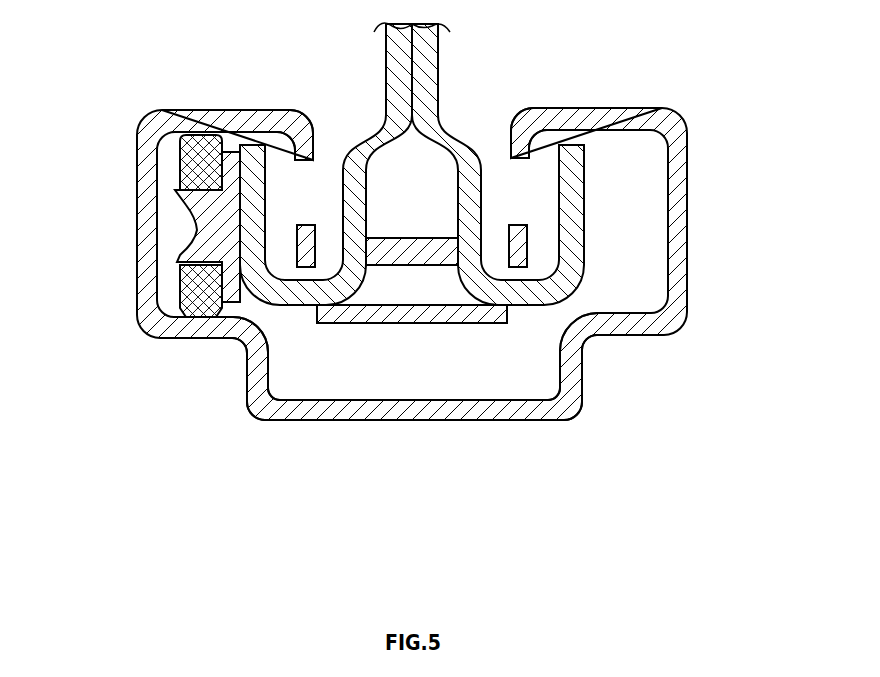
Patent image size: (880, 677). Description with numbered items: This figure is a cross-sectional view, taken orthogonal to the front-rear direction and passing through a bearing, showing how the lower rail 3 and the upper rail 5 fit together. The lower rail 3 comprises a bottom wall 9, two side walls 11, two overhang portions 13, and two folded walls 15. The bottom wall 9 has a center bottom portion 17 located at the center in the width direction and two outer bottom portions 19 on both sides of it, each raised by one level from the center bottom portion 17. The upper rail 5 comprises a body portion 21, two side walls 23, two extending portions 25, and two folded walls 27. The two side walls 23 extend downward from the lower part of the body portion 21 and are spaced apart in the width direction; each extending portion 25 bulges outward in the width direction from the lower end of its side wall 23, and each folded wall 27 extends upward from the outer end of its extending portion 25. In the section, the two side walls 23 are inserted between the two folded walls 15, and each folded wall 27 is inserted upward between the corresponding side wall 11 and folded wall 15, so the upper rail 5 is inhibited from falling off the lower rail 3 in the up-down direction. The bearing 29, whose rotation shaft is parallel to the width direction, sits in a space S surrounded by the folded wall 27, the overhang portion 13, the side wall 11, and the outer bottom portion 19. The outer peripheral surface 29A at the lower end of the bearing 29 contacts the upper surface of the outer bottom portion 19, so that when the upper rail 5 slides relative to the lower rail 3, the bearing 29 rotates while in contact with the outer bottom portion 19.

The lower rail 3 is at (688, 258).
The upper rail 5 is at (386, 58).
The bottom wall 9 is at (427, 441).
The side wall 11 is at (137, 178).
The overhang portion 13 is at (215, 108).
The folded wall 15 is at (330, 233).
The center bottom portion 17 is at (557, 508).
The outer bottom portion 19 is at (210, 332).
The body portion 21 is at (440, 50).
The side wall 23 is at (367, 193).
The extending portion 25 is at (298, 310).
The folded wall 27 is at (263, 196).
The bearing 29 is at (157, 269).
The outer peripheral surface 29A is at (190, 320).
The space S is at (277, 140).